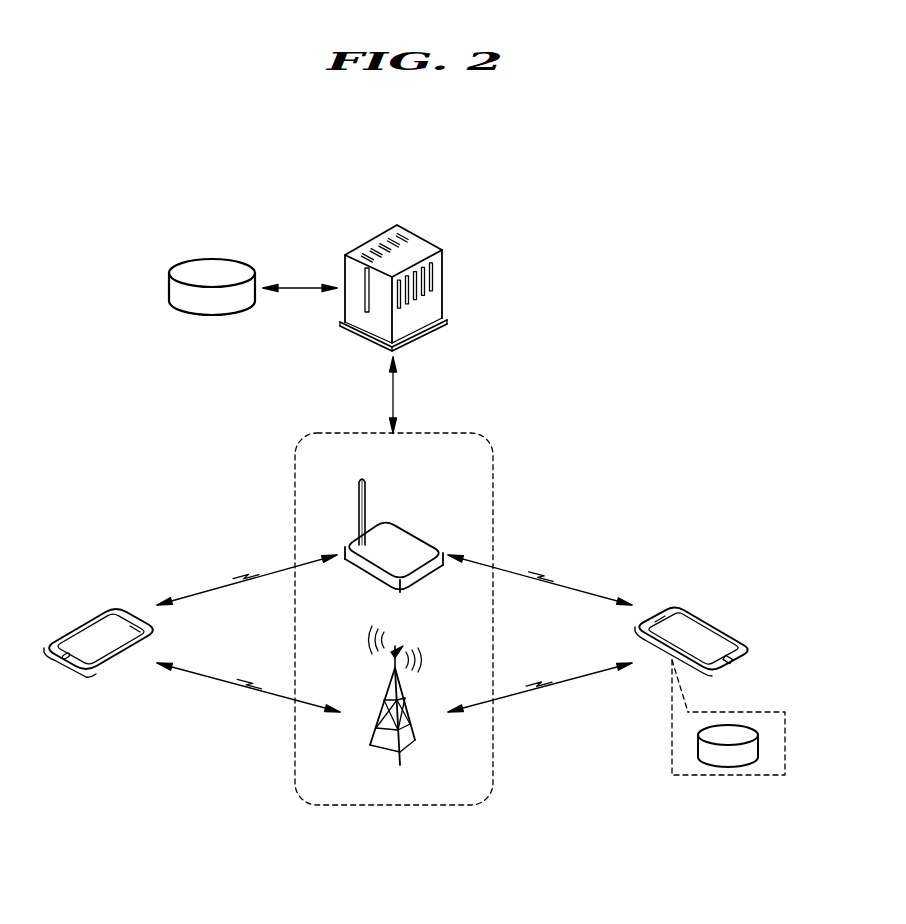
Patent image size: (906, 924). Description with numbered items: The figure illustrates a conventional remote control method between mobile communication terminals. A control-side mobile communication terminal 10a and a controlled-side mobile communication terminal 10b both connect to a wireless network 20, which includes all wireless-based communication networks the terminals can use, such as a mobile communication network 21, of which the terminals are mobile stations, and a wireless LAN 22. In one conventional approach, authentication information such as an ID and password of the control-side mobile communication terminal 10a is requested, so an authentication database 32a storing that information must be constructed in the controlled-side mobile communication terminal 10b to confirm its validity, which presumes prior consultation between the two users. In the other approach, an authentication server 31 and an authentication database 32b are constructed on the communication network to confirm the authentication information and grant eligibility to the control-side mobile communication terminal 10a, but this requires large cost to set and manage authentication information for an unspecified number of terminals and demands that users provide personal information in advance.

The control-side mobile communication terminal 10a is at (88, 632).
The controlled-side mobile communication terminal 10b is at (700, 632).
The wireless network 20 is at (405, 806).
The mobile communication network 21 is at (381, 708).
The wireless LAN 22 is at (397, 535).
The authentication server 31 is at (432, 293).
The authentication database 32a is at (728, 758).
The authentication database 32b is at (175, 293).